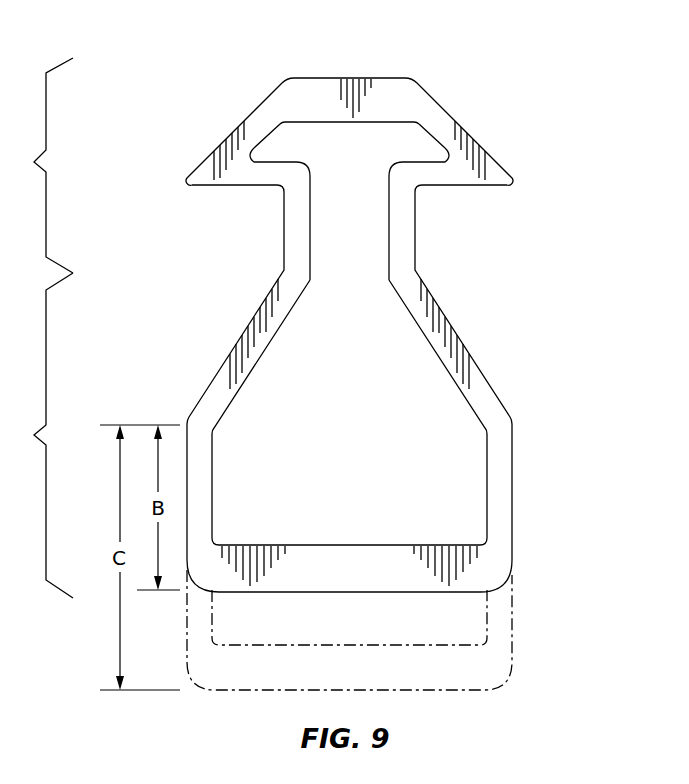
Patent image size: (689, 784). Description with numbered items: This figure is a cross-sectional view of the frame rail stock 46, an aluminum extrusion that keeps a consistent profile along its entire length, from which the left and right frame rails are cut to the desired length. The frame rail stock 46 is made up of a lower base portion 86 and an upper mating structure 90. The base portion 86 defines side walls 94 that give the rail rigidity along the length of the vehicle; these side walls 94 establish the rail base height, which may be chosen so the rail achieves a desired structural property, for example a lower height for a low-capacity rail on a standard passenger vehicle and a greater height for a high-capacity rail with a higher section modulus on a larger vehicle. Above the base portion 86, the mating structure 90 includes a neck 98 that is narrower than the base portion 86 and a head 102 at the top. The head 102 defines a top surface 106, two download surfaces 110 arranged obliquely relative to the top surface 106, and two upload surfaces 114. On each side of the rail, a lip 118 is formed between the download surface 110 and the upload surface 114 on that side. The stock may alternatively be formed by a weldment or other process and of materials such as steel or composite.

The frame rail stock 46 is at (560, 332).
The base portion 86 is at (41, 435).
The mating structure 90 is at (41, 165).
The side walls 94 is at (203, 488).
The neck 98 is at (303, 259).
The head 102 is at (546, 105).
The top surface 106 is at (343, 76).
The download surfaces 110 is at (248, 120).
The upload surfaces 114 is at (248, 187).
The lip 118 is at (188, 185).